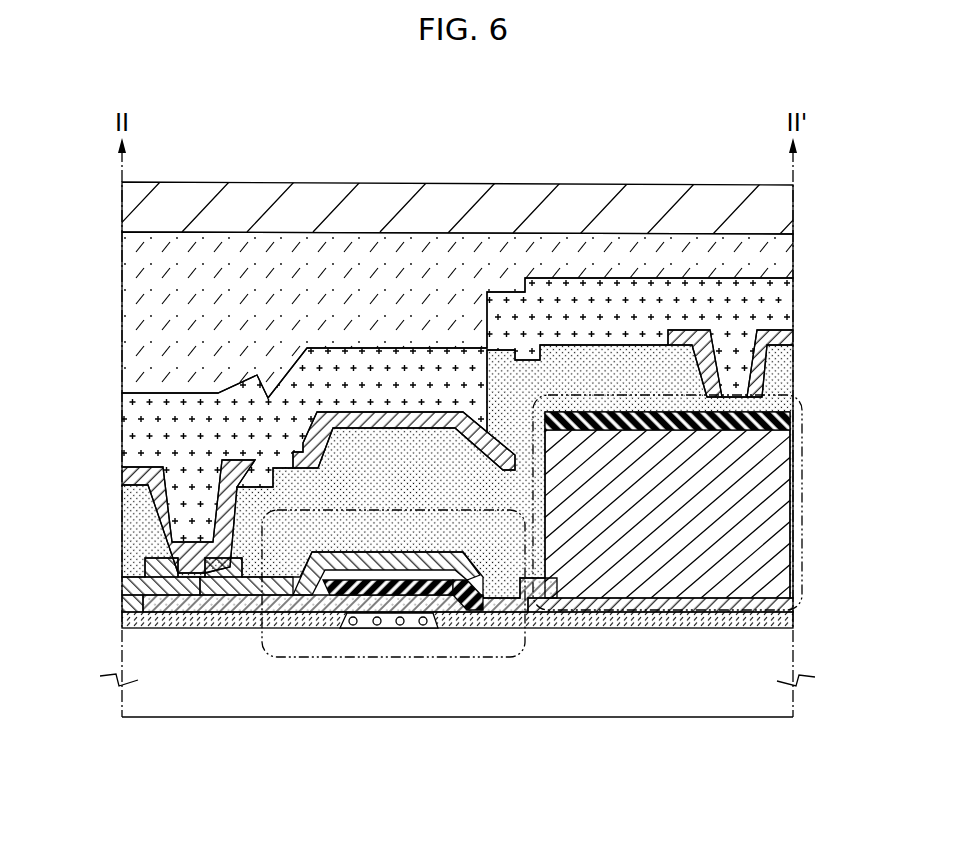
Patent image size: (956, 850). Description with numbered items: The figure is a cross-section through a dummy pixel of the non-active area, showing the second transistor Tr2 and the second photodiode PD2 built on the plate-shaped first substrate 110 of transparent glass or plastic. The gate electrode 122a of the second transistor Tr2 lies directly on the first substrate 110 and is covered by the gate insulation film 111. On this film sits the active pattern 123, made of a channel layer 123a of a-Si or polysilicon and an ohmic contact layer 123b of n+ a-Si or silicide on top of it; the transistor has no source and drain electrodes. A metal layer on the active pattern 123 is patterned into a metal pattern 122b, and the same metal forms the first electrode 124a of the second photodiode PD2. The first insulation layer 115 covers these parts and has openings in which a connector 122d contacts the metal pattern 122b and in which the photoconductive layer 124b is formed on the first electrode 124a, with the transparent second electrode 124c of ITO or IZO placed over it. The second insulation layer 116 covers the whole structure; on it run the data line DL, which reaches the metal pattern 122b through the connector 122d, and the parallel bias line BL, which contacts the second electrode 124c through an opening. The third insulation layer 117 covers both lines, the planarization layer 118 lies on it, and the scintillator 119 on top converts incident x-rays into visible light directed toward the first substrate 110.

The first substrate 110 is at (777, 662).
The gate insulation film 111 is at (128, 620).
The first insulation layer 115 is at (134, 590).
The second insulation layer 116 is at (128, 523).
The third insulation layer 117 is at (128, 410).
The planarization layer 118 is at (128, 312).
The scintillator 119 is at (126, 207).
The data line DL is at (124, 474).
The bias line BL is at (400, 412).
The gate electrode 122a is at (381, 628).
The metal pattern 122b is at (243, 600).
The connector 122d is at (184, 585).
The active pattern 123 is at (424, 698).
The channel layer 123a is at (460, 597).
The ohmic contact layer 123b is at (476, 597).
The first electrode 124a is at (793, 604).
The photoconductive layer 124b is at (786, 522).
The second electrode 124c is at (790, 421).
The second transistor Tr2 is at (330, 657).
The second photodiode PD2 is at (681, 610).